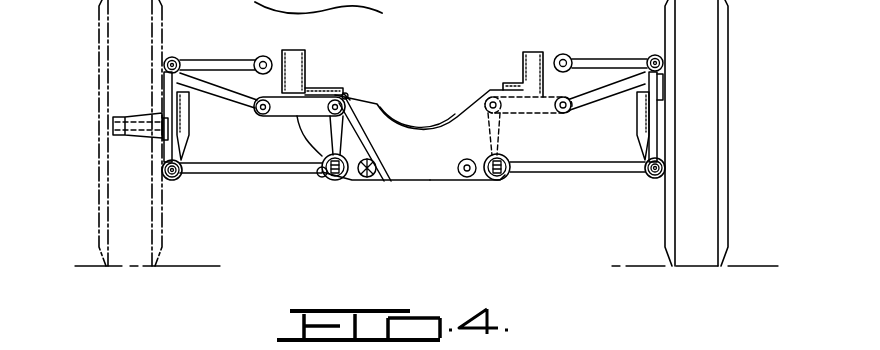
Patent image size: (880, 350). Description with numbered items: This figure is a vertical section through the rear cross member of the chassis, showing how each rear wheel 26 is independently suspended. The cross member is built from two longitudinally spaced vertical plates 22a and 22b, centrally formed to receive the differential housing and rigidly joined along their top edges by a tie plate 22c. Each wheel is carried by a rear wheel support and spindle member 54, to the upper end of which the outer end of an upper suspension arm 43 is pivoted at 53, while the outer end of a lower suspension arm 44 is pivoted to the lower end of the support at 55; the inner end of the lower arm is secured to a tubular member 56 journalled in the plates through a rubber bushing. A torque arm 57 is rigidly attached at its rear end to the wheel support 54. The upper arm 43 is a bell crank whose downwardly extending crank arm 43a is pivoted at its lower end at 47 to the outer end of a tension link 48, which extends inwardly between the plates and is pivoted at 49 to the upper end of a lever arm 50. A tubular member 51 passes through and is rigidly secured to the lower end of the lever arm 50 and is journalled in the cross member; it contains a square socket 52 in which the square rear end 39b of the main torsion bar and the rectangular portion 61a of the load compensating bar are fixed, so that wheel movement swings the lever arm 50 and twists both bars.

The vertical plate 22a is at (447, 182).
The vertical plate 22b is at (388, 186).
The tie plate 22c is at (452, 118).
The rear wheel 26 is at (108, 178).
The rear square end of main torsion bar spring 39b is at (362, 125).
The upper suspension arm 43 is at (222, 58).
The crank arm 43a is at (258, 90).
The lower suspension arm 44 is at (258, 176).
The pivot 47 is at (285, 118).
The tension link 48 is at (322, 88).
The pivot 49 is at (348, 96).
The lever arm 50 is at (328, 145).
The tubular member 51 is at (335, 182).
The square socket 52 is at (321, 178).
The pivot 53 is at (175, 56).
The rear wheel support and spindle member 54 is at (190, 150).
The pivot 55 is at (179, 179).
The tubular member 56 is at (368, 180).
The torque arm 57 is at (193, 108).
The rectangular portion of load compensating bar 61a is at (371, 142).